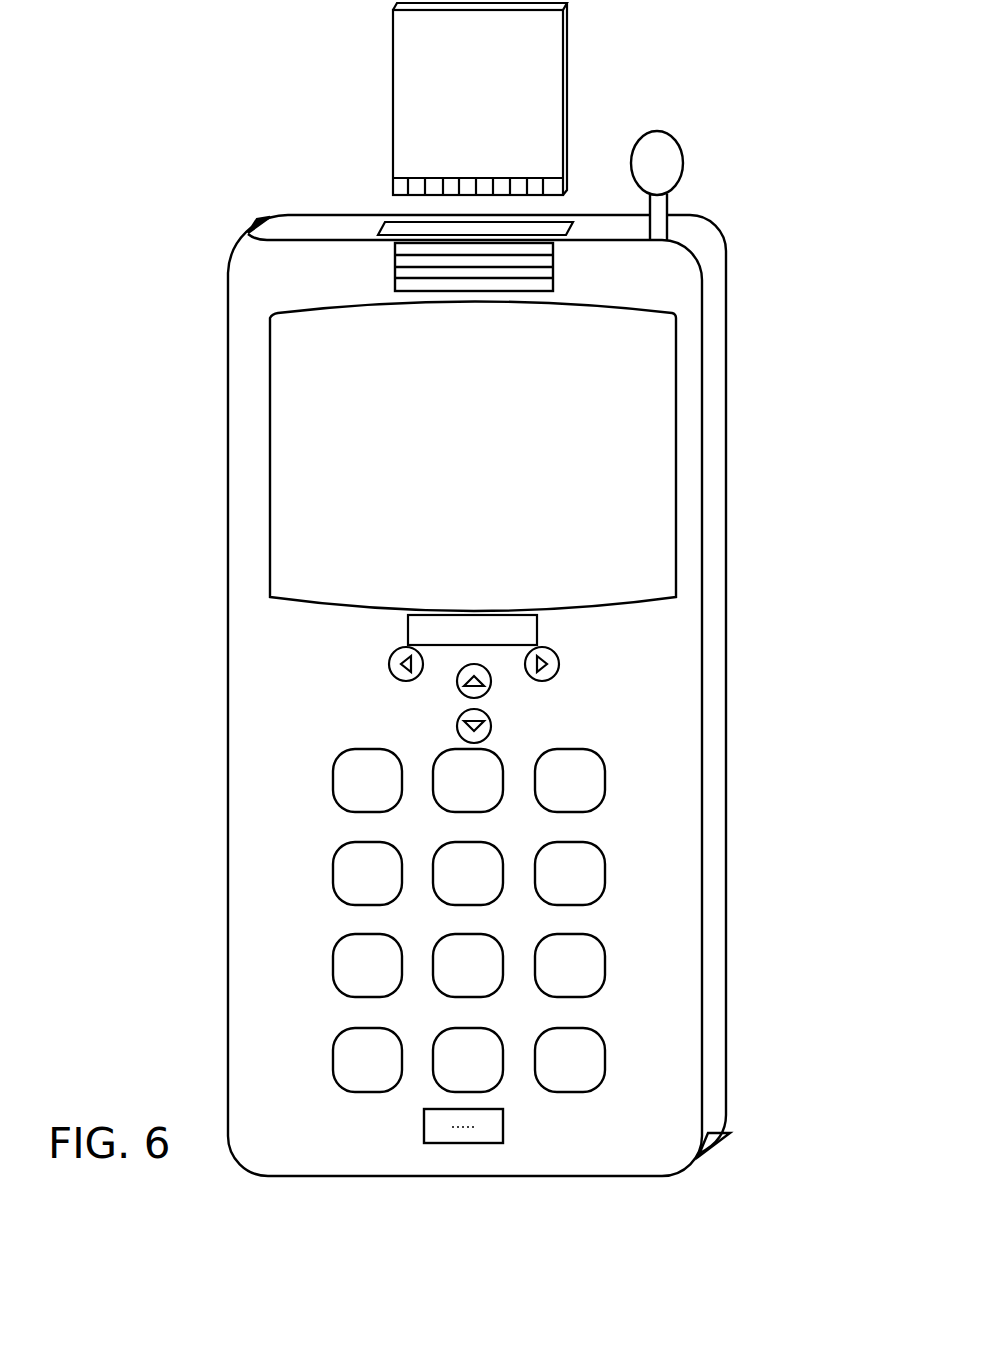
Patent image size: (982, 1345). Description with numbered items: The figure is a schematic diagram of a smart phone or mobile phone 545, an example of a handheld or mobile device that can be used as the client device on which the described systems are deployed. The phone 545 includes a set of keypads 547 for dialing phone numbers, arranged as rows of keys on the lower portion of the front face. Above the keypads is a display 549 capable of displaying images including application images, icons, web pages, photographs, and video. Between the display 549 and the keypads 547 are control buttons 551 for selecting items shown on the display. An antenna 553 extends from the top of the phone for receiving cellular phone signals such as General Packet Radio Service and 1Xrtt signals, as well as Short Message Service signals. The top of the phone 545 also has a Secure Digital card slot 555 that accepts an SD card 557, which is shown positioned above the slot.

The smart phone or mobile phone 545 is at (228, 273).
The set of keypads 547 is at (625, 787).
The display 549 is at (675, 450).
The control buttons 551 is at (423, 688).
The antenna 553 is at (685, 171).
The Secure Digital (SD) card slot 555 is at (420, 228).
The SD card 557 is at (572, 63).